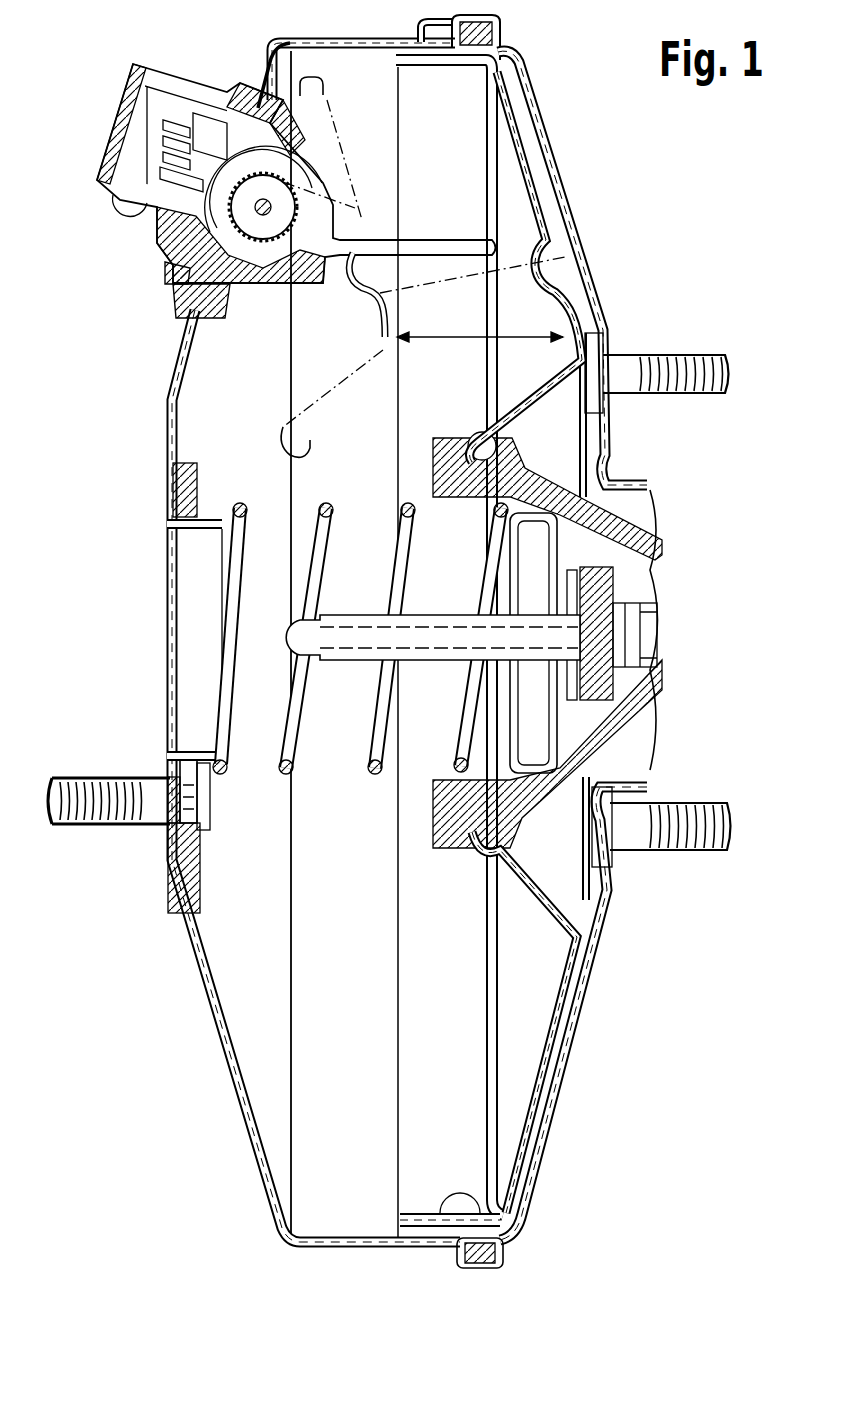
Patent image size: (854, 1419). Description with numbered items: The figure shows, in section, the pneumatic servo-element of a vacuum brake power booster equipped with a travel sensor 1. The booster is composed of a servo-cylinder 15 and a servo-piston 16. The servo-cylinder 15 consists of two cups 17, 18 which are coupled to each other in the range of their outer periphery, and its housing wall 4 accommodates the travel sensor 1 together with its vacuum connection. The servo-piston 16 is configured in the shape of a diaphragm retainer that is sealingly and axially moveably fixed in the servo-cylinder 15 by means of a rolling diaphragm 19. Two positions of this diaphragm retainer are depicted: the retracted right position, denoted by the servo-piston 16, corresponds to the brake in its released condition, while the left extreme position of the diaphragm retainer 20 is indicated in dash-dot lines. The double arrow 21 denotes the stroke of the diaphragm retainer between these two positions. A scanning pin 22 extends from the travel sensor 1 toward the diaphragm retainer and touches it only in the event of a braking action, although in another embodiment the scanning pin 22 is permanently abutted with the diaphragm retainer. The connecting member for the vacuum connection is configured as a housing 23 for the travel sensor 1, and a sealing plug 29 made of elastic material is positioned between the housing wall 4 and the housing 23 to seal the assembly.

The travel sensor 1 is at (277, 173).
The housing wall 4 is at (144, 655).
The servo-cylinder 15 is at (213, 1055).
The servo-piston 16 is at (589, 642).
The cup 17 is at (589, 645).
The cup 18 is at (276, 776).
The rolling diaphragm 19 is at (531, 1249).
The position of the diaphragm retainer 20 is at (520, 261).
The double arrow 21 is at (540, 320).
The scanning pin 22 is at (461, 267).
The housing 23 is at (124, 286).
The sealing plug 29 is at (144, 327).